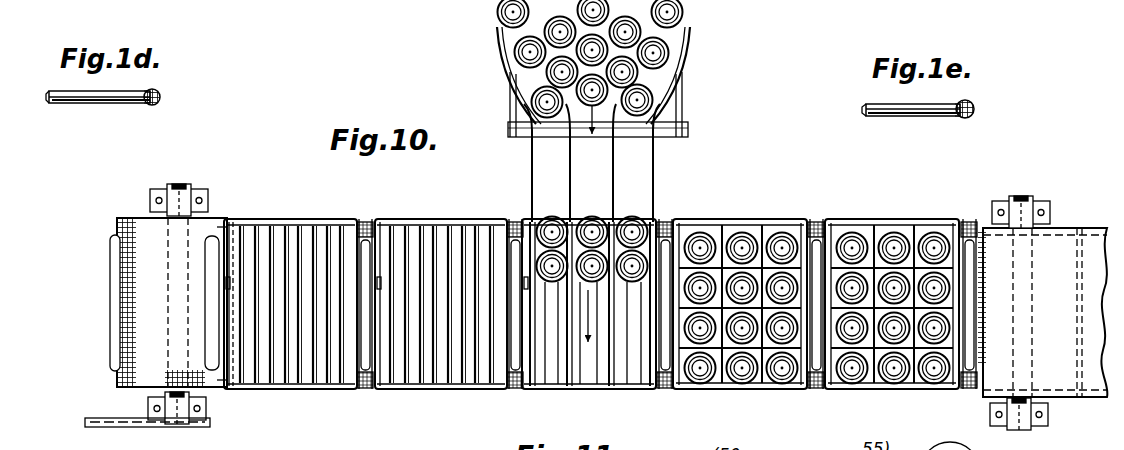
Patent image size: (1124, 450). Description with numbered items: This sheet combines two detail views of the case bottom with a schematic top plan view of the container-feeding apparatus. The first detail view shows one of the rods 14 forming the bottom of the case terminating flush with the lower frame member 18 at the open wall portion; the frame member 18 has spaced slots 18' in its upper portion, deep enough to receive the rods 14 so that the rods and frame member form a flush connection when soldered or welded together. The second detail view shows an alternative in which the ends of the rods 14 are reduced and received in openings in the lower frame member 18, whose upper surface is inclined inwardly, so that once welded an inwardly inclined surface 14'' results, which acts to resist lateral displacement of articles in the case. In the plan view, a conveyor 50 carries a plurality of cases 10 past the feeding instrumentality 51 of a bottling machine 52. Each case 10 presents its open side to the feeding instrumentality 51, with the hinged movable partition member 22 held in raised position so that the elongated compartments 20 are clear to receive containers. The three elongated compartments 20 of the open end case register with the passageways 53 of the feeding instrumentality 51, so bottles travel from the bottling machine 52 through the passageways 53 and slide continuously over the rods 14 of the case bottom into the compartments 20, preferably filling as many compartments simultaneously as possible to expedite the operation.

In FIG. 10, the case 10 is at (291, 219).
In FIG. 1D, the rods 14 is at (96, 116).
In FIG. 1E, the rods 14 is at (911, 128).
In FIG. 10, the rods 14 is at (590, 355).
In FIG. 1E, the inwardly inclined surface 14'' is at (989, 101).
In FIG. 1D, the lower frame member 18 is at (164, 115).
In FIG. 1E, the lower frame member 18 is at (980, 126).
In FIG. 1D, the slots 18' is at (176, 101).
In FIG. 10, the elongated compartments 20 is at (548, 368).
In FIG. 10, the hinged movable partition member 22 is at (645, 370).
In FIG. 10, the conveyor 50 is at (140, 360).
In FIG. 10, the feeding instrumentality 51 is at (660, 163).
In FIG. 10, the bottling machine 52 is at (691, 31).
In FIG. 10, the passageways 53 is at (530, 216).